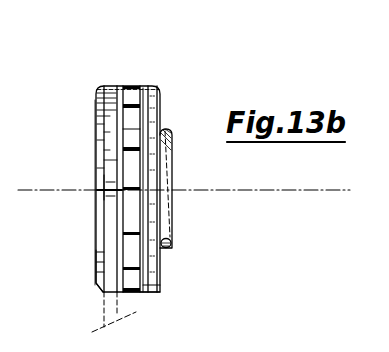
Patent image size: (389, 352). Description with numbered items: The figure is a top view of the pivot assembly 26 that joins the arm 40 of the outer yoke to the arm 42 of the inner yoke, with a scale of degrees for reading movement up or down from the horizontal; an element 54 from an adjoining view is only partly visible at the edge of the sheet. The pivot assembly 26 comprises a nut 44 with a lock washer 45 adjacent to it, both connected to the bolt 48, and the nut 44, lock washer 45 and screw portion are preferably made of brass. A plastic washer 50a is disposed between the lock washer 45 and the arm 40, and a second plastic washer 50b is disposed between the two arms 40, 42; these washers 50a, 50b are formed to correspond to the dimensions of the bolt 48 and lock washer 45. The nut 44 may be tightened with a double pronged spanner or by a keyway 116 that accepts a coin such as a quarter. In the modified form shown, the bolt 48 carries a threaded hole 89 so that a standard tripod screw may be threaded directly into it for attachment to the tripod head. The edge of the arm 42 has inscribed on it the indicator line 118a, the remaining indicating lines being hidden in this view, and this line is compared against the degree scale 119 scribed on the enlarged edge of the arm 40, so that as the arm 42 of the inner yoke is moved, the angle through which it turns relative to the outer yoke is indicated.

The adjacent figure element (partial) 54 is at (41, 4).
The arm of outer yoke 40 is at (132, 86).
The arm of inner yoke 42 is at (107, 87).
The bolt 48 is at (97, 230).
The indicating line 118a is at (105, 187).
The threaded hole 89 is at (100, 188).
The pivot assembly 26 is at (90, 196).
The washer 50b is at (118, 87).
The scale of degrees 119 is at (134, 141).
The washer 50a is at (143, 292).
The lock washer 45 is at (152, 110).
The keyway 116 is at (168, 212).
The nut 44 is at (170, 243).